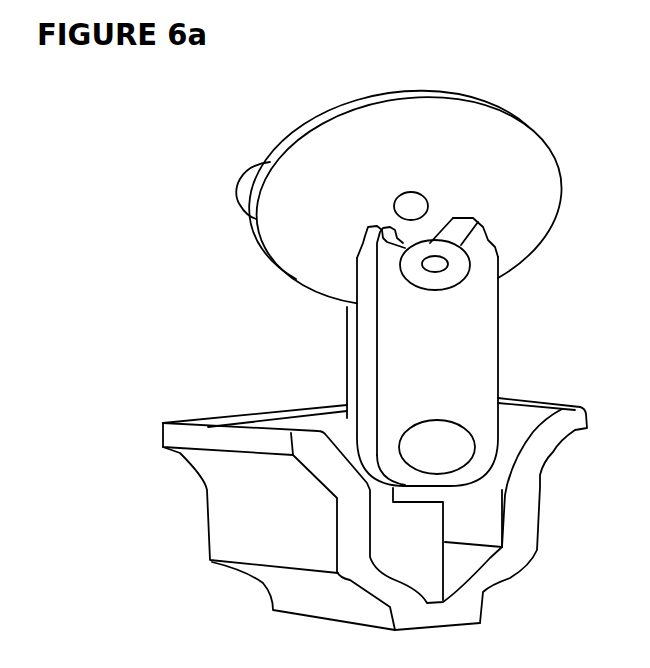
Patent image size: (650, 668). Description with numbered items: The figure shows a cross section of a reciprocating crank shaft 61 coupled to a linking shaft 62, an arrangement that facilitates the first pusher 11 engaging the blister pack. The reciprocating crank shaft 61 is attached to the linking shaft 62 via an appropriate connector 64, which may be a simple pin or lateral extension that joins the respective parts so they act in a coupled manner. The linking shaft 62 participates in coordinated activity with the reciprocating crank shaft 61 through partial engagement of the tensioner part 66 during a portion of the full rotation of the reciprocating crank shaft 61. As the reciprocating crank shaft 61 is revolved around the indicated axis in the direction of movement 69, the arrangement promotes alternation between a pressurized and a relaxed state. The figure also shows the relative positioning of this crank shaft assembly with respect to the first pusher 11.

The first pusher 11 is at (375, 514).
The reciprocating crank shaft 61 is at (398, 254).
The linking shaft 62 is at (427, 352).
The connector 64 is at (437, 447).
The tensioner part 66 is at (462, 280).
The direction of movement 69 is at (278, 105).